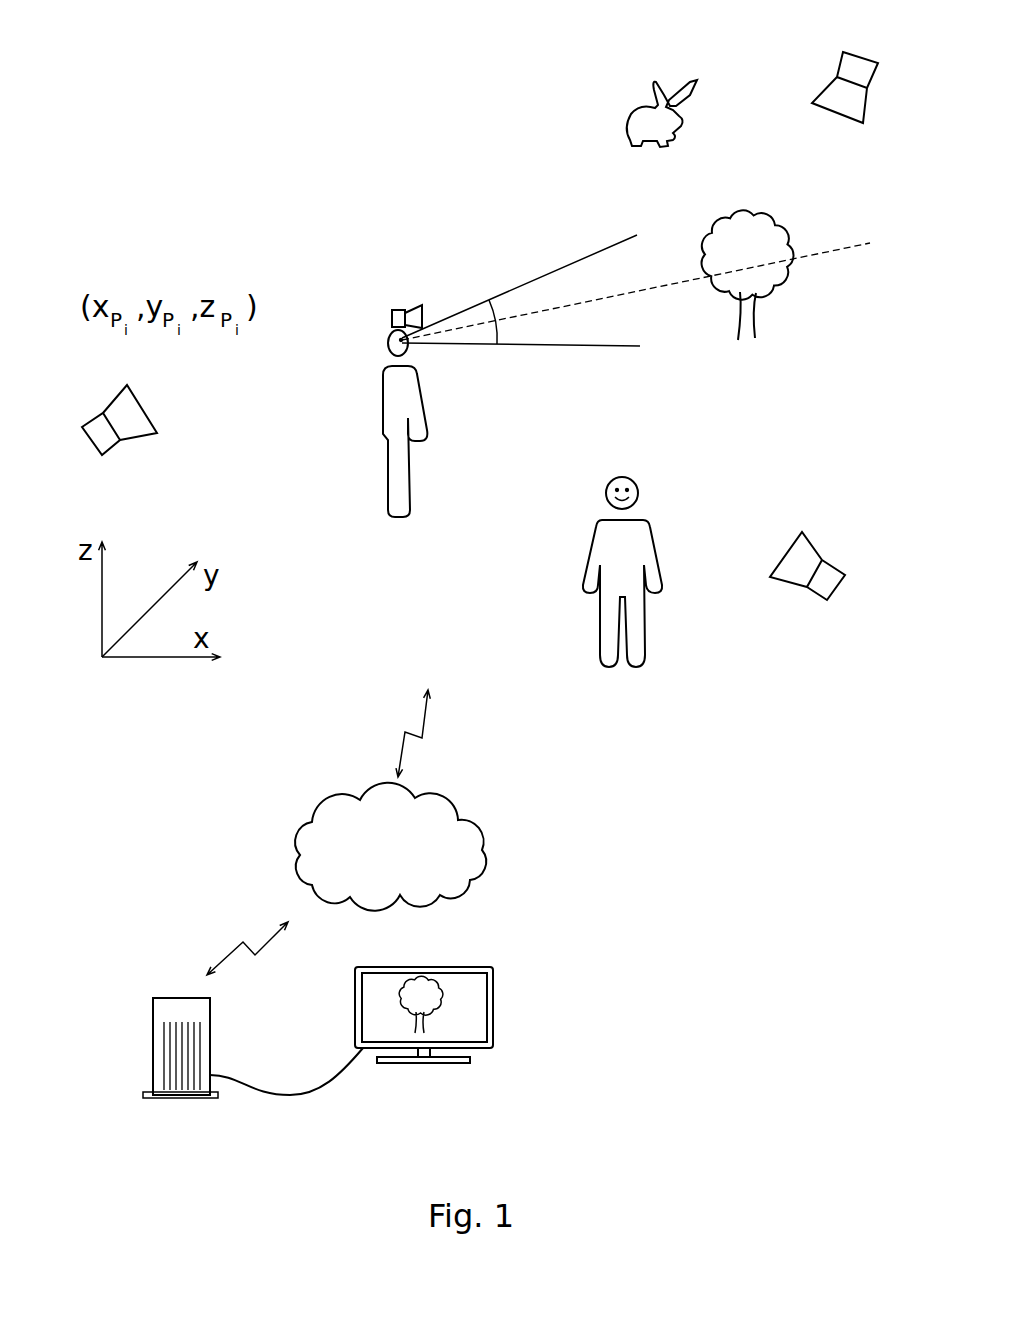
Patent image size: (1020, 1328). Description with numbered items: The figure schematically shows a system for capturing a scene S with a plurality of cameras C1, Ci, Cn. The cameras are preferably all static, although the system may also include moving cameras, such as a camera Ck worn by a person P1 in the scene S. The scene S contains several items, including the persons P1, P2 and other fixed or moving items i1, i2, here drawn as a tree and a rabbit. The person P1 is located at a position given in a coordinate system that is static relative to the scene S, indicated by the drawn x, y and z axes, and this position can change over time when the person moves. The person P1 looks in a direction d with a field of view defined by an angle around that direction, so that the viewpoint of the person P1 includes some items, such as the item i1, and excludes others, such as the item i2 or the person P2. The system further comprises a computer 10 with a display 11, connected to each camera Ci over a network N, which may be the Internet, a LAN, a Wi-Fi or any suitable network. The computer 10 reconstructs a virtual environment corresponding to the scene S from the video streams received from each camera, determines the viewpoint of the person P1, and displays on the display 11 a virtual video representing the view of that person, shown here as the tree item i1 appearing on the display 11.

The scene S is at (571, 176).
The item i1 is at (750, 323).
The item i2 is at (652, 117).
The camera Cn is at (843, 67).
The camera worn by a person Ck is at (396, 312).
The camera C1 is at (103, 428).
The camera Ci is at (807, 583).
The person P1 is at (343, 450).
The person P2 is at (576, 615).
The direction d is at (888, 225).
The network N is at (346, 832).
The computer 10 is at (165, 1100).
The display 11 is at (477, 1008).